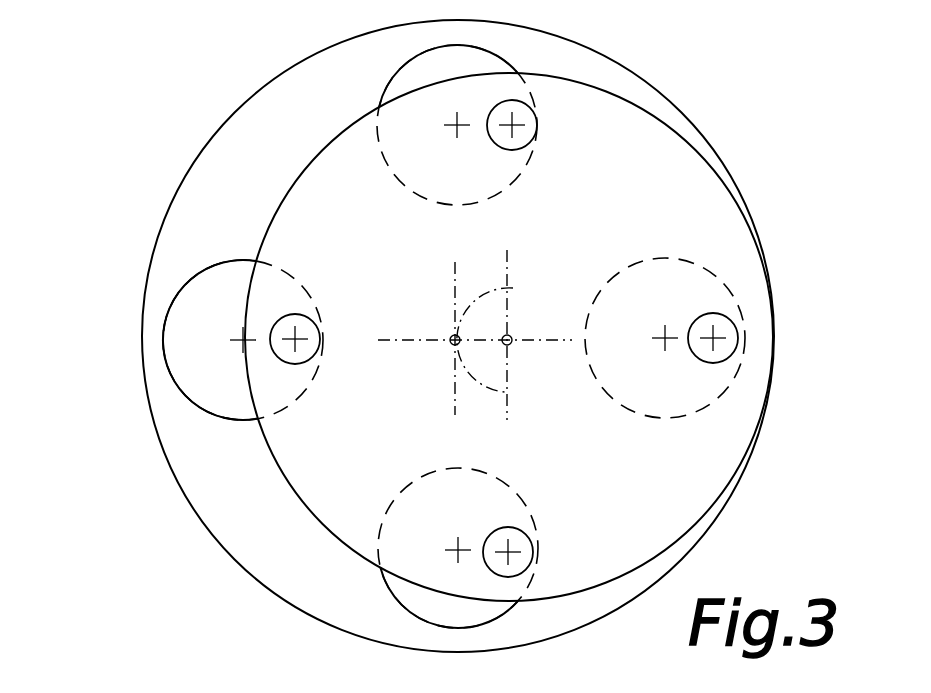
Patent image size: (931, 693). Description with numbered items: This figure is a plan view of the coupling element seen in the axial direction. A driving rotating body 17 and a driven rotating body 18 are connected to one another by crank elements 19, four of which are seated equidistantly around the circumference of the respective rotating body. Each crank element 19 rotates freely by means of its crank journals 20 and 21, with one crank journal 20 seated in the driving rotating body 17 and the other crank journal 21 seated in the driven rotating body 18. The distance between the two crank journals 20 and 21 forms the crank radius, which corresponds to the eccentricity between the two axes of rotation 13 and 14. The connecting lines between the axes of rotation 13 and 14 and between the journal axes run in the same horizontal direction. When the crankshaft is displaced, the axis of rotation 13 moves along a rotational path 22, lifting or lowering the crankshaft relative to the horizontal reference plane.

The axis of rotation 13 is at (450, 345).
The axis of rotation 14 is at (512, 345).
The driving rotating body 17 is at (245, 113).
The driven rotating body 18 is at (653, 157).
The crank element 19 is at (200, 425).
The crank journal 20 is at (188, 365).
The crank journal 21 is at (270, 340).
The rotational path 22 is at (493, 290).